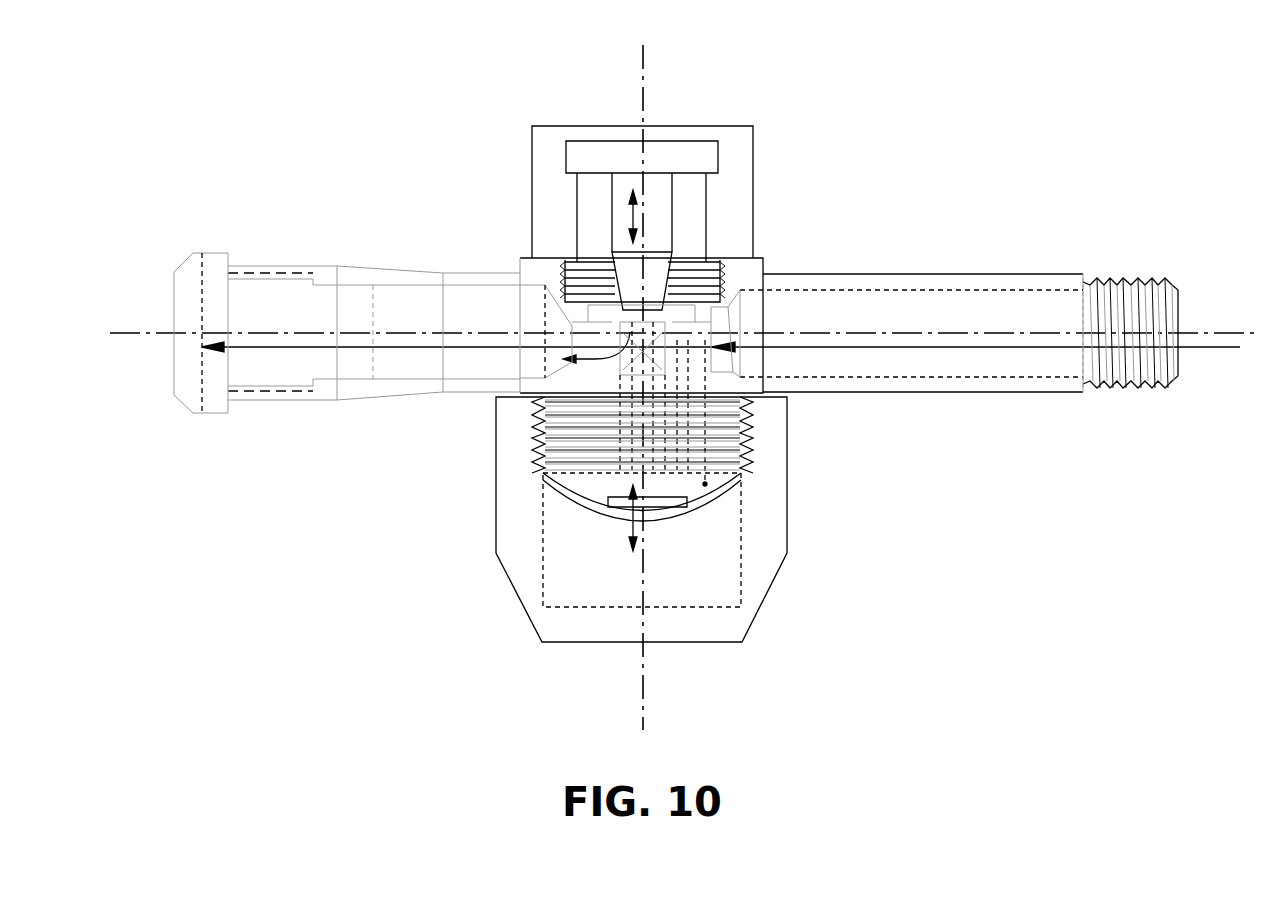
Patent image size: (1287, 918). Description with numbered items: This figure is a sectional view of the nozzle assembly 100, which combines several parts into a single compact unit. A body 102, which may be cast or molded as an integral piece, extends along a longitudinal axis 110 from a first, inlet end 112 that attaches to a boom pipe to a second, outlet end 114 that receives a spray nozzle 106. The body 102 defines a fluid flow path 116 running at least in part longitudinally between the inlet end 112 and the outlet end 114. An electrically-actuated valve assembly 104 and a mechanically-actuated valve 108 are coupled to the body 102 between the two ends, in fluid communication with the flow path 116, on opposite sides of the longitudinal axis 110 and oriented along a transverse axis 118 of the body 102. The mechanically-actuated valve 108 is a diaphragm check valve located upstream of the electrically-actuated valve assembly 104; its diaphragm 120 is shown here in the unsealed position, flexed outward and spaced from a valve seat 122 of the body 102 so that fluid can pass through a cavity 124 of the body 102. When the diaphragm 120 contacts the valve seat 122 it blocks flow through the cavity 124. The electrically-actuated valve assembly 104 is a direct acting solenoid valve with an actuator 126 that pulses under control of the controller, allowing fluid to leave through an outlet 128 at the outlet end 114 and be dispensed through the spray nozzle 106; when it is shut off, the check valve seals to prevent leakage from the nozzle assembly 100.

The nozzle assembly 100 is at (1030, 181).
The body 102 is at (987, 393).
The electrically-actuated valve assembly 104 is at (755, 160).
The spray nozzle 106 is at (215, 253).
The mechanically-actuated valve 108 is at (762, 626).
The longitudinal axis 110 is at (916, 333).
The first, inlet end 112 is at (1177, 386).
The second, outlet end 114 is at (230, 302).
The fluid flow path 116 is at (892, 348).
The transverse axis 118 is at (648, 77).
The diaphragm 120 is at (577, 512).
The valve seat 122 is at (600, 464).
The cavity 124 is at (644, 388).
The actuator 126 is at (606, 140).
The outlet 128 is at (230, 374).